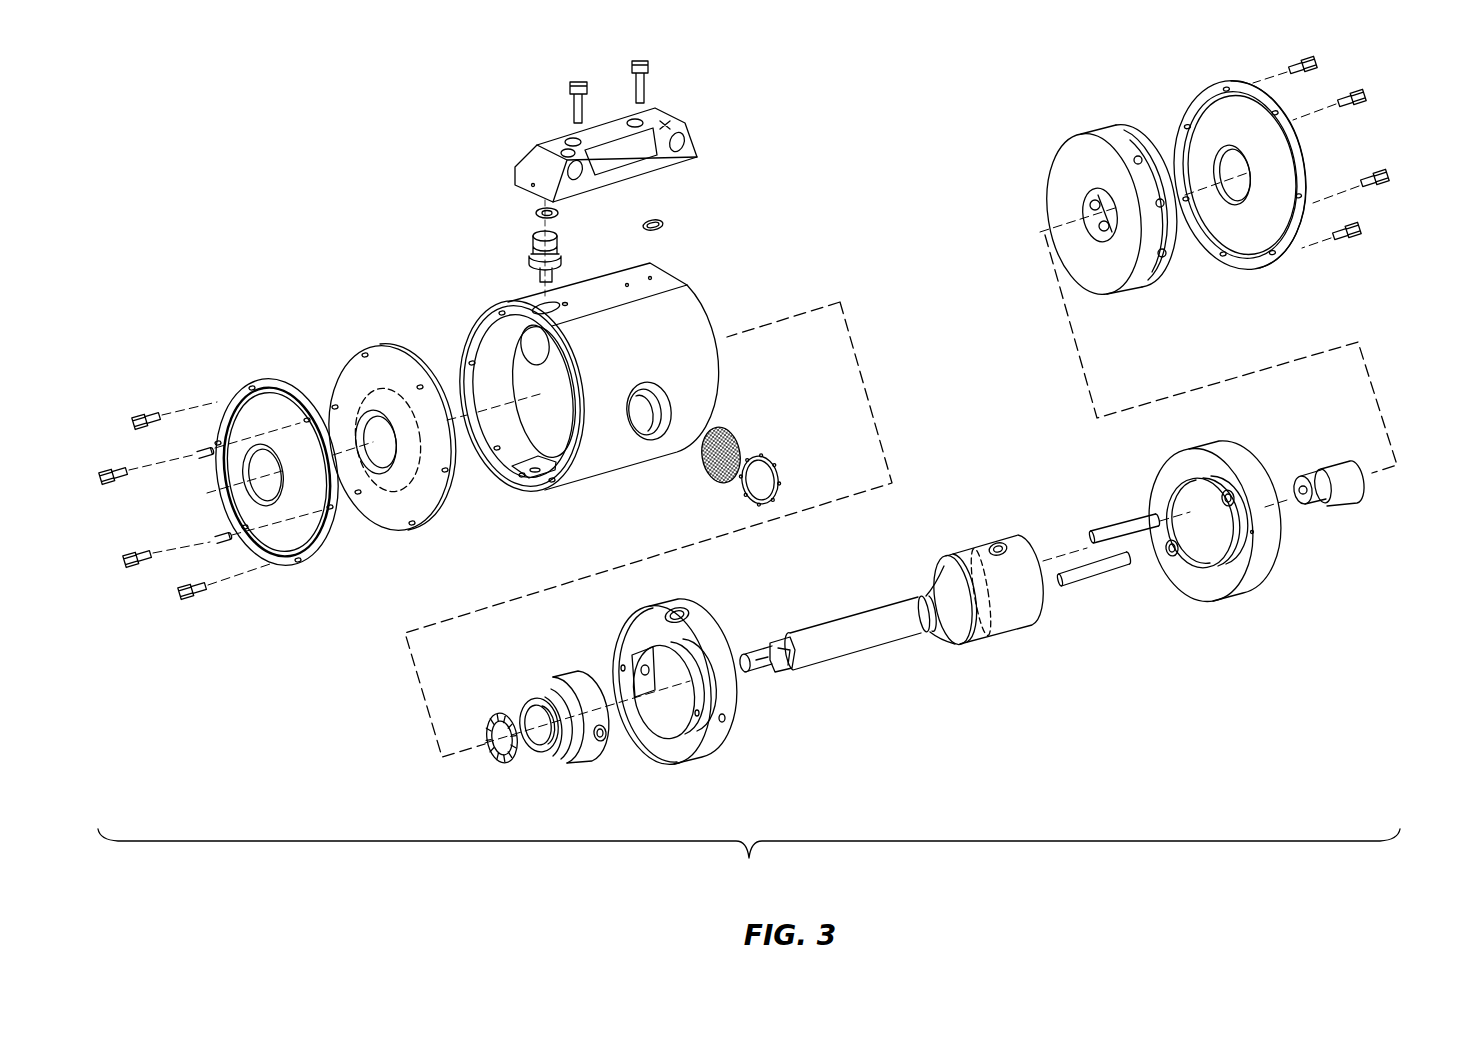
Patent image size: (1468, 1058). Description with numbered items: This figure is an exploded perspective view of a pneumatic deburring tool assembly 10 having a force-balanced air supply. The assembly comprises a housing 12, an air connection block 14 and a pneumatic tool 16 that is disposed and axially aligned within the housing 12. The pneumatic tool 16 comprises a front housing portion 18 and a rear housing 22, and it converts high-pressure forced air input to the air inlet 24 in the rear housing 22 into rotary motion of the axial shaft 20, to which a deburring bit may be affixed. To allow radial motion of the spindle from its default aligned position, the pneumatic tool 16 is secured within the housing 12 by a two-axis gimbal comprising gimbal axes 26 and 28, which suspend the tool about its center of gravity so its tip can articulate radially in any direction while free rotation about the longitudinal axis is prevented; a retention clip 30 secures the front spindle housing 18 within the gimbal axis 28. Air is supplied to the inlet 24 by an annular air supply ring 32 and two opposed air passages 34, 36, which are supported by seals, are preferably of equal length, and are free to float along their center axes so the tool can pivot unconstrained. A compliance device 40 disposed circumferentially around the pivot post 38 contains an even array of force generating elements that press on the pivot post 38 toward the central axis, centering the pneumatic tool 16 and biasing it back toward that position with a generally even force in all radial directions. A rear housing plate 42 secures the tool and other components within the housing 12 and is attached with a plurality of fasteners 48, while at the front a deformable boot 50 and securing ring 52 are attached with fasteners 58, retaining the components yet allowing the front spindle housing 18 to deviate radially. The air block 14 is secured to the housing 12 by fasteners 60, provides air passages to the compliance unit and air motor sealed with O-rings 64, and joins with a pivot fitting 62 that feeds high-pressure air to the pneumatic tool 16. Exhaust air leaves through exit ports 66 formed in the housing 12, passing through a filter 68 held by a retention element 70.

The deburring tool assembly 10 is at (749, 857).
The housing 12 is at (597, 470).
The air connection block 14 is at (688, 153).
The pneumatic tool 16 is at (838, 585).
The front housing portion 18 is at (845, 650).
The axial shaft 20 is at (768, 645).
The rear housing 22 is at (1010, 620).
The air inlet 24 is at (992, 546).
The gimbal axis 26 is at (668, 752).
The gimbal axis 28 is at (588, 755).
The retention clip 30 is at (508, 767).
The annular air supply ring 32 is at (1233, 455).
The air passage 34 is at (1135, 522).
The air passage 36 is at (1095, 583).
The pivot post 38 is at (1343, 500).
The compliance device 40 is at (1105, 280).
The rear housing plate 42 is at (1253, 245).
The fasteners 48 is at (1380, 172).
The deformable boot 50 is at (428, 497).
The securing ring 52 is at (313, 563).
The fasteners 58 is at (197, 593).
The fasteners 60 is at (575, 118).
The pivot fitting 62 is at (528, 262).
The O-rings 64 is at (538, 213).
The exit ports 66 is at (658, 430).
The filter 68 is at (742, 438).
The retention element 70 is at (777, 468).